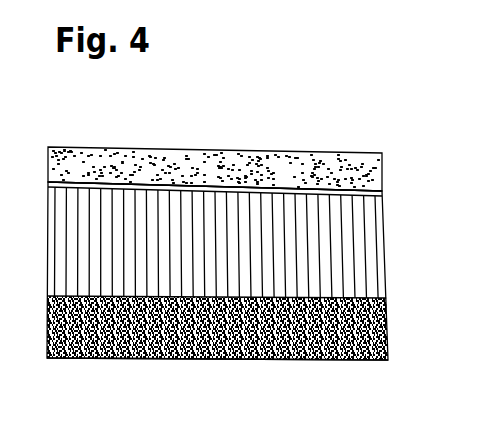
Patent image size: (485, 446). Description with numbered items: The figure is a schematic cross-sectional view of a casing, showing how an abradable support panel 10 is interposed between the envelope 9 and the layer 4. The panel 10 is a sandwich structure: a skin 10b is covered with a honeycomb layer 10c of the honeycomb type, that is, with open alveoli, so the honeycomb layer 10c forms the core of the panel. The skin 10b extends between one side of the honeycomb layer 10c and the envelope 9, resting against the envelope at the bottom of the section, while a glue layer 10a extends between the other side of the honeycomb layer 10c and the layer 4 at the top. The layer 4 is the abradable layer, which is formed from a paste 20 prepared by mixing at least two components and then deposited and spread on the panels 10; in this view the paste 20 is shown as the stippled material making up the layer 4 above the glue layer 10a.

The layer 4 is at (307, 170).
The paste 20 is at (348, 159).
The abradable support panel 10 is at (385, 233).
The glue layer 10a is at (383, 193).
The skin 10b is at (387, 298).
The honeycomb layer 10c is at (386, 259).
The envelope 9 is at (313, 360).